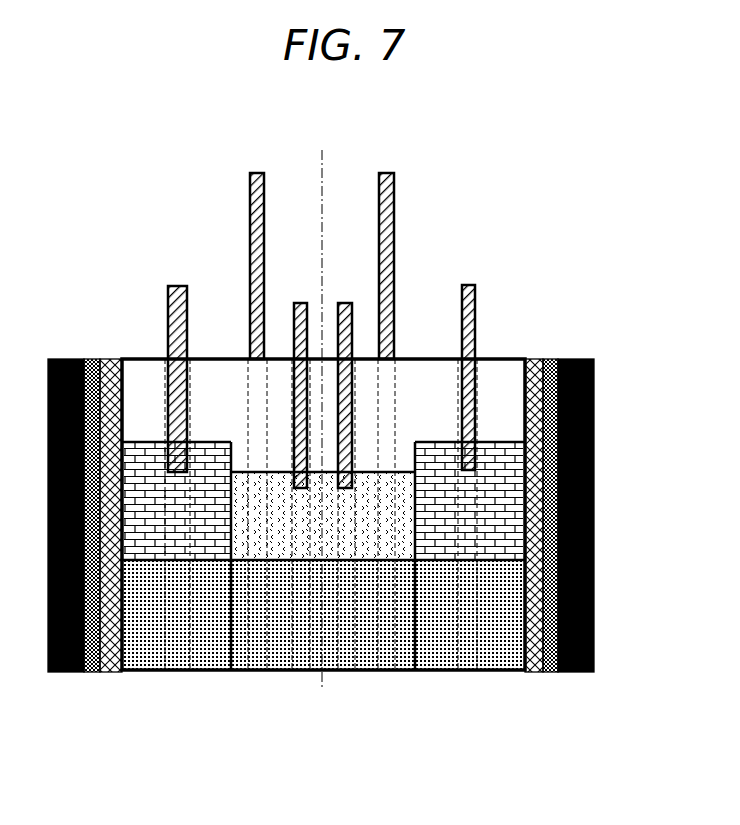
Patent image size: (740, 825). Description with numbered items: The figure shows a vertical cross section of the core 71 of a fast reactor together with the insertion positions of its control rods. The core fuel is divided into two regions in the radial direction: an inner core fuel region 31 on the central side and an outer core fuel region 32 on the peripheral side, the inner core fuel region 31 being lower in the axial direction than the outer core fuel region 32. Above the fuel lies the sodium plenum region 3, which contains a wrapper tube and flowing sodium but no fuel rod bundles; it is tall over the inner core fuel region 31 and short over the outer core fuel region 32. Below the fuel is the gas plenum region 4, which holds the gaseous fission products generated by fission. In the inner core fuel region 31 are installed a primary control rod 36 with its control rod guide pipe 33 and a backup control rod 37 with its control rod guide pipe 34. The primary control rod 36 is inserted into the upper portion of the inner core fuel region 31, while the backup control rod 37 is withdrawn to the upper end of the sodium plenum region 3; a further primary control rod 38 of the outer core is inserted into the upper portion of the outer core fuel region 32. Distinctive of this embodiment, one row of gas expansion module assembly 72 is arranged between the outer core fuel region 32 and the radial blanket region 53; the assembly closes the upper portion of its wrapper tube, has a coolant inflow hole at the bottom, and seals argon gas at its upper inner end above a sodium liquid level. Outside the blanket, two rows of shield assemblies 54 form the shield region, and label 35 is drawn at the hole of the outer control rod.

The sodium plenum region 3 is at (420, 358).
The gas plenum region 4 is at (502, 615).
The inner core fuel region 31 is at (595, 533).
The outer core fuel region 32 is at (537, 483).
The control rod guide pipe 33 is at (355, 432).
The control rod guide pipe 34 is at (395, 398).
The lead hole 35 is at (477, 420).
The primary control rod 36 is at (346, 305).
The backup control rod 37 is at (394, 205).
The primary control rod 38 is at (475, 312).
The radial blanket region 53 is at (551, 673).
The shield assemblies 54 is at (577, 673).
The core of the fast reactor 71 is at (322, 140).
The gas expansion module assembly 72 is at (530, 673).